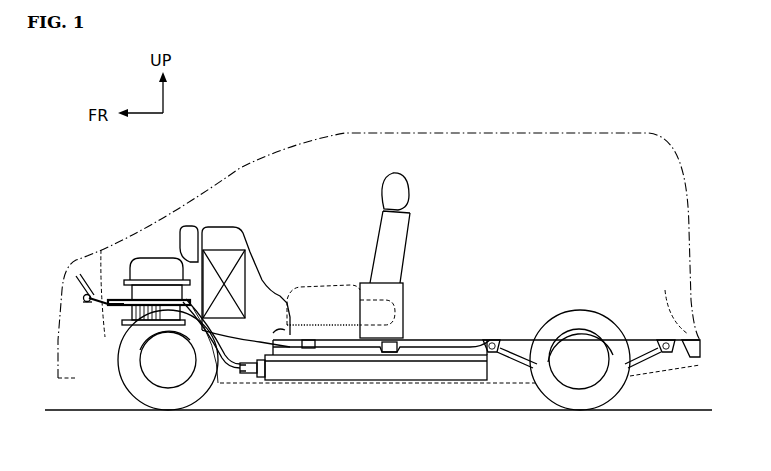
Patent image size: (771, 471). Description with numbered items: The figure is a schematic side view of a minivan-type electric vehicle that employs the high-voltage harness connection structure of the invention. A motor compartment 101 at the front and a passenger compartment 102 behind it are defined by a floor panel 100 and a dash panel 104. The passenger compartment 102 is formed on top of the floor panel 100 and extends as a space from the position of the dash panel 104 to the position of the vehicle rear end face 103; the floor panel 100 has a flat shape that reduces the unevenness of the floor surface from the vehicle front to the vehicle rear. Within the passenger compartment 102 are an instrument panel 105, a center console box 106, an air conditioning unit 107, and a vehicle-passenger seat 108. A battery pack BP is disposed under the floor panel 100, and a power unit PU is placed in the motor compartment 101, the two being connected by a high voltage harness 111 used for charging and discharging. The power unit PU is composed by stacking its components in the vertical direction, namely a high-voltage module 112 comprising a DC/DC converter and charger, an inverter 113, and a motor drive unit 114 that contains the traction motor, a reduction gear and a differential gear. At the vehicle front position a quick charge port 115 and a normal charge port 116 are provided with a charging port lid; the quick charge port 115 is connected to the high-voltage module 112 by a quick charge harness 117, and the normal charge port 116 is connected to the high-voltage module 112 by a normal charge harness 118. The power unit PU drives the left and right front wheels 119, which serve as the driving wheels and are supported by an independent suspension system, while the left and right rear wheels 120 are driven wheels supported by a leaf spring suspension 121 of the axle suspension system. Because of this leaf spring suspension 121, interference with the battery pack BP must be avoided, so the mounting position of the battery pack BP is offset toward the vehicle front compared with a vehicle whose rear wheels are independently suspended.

The floor panel 100 is at (483, 340).
The motor compartment 101 is at (103, 376).
The passenger compartment 102 is at (347, 205).
The vehicle rear end face 103 is at (665, 289).
The dash panel 104 is at (221, 250).
The instrument panel 105 is at (250, 237).
The center console box 106 is at (318, 322).
The air conditioning unit 107 is at (247, 287).
The vehicle-passenger seat 108 is at (411, 233).
The high voltage harness 111 is at (213, 381).
The high-voltage module 112 is at (139, 258).
The inverter 113 is at (155, 288).
The motor drive unit 114 is at (132, 364).
The quick charge port 115 is at (64, 292).
The normal charge port 116 is at (85, 300).
The quick charge harness 117 is at (103, 296).
The normal charge harness 118 is at (119, 326).
The front wheels 119 is at (183, 395).
The rear wheels 120 is at (600, 392).
The leaf spring suspension 121 is at (515, 360).
The power unit PU is at (130, 256).
The battery pack BP is at (383, 382).